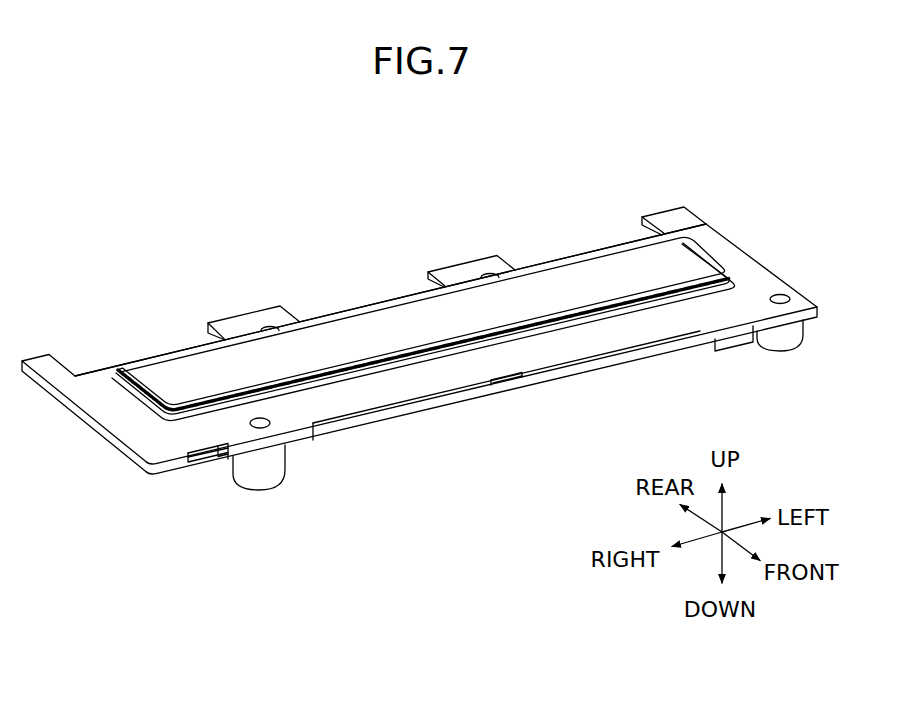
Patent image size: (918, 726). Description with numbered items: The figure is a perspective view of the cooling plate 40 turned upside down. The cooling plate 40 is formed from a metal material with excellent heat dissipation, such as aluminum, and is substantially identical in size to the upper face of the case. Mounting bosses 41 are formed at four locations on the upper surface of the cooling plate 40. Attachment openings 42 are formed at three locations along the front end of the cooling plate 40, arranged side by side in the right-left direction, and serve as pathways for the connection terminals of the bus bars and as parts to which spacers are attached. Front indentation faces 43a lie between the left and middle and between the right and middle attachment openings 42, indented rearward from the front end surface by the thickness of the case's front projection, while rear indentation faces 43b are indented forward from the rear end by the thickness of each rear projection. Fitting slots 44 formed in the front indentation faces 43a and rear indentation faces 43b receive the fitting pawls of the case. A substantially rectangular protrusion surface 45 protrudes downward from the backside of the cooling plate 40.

The cooling plate 40 is at (740, 260).
The mounting boss 41 is at (273, 477).
The attachment opening 42 is at (143, 352).
The front indentation face 43a is at (207, 330).
The rear indentation face 43b is at (197, 467).
The fitting slot 44 is at (217, 453).
The protrusion surface 45 is at (677, 257).